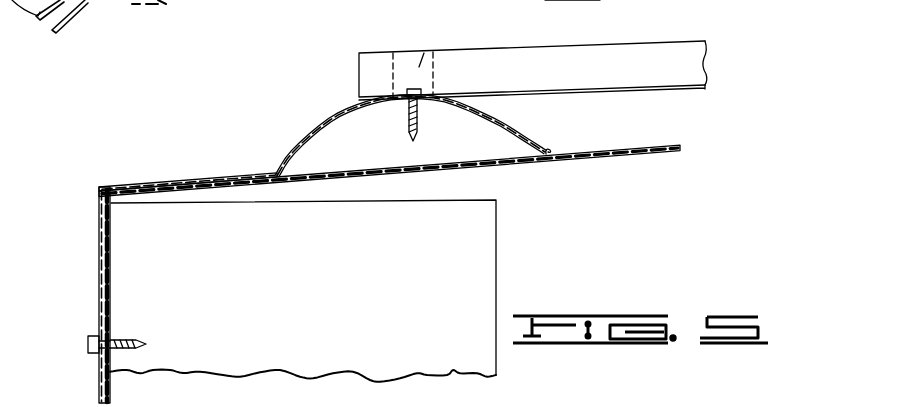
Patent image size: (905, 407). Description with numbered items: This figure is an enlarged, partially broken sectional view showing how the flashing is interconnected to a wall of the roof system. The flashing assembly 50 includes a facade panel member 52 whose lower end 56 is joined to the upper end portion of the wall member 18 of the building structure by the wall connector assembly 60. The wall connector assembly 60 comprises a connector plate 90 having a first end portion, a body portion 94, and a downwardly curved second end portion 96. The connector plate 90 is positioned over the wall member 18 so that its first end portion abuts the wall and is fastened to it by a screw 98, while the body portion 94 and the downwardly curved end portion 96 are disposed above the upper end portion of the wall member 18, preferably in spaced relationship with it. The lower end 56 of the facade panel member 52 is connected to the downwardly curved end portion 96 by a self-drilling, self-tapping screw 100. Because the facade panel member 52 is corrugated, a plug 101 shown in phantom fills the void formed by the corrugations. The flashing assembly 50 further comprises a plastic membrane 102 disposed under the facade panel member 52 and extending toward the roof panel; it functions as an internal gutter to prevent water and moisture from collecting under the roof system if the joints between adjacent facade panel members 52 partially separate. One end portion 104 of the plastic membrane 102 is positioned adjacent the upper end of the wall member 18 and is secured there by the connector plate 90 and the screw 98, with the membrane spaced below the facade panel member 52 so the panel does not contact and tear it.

The wall member 18 is at (330, 284).
The flashing assembly 50 is at (560, 44).
The facade panel member 52 is at (645, 44).
The lower end 56 is at (408, 63).
The wall connector assembly 60 is at (175, 176).
The connector plate 90 is at (99, 272).
The body portion 94 is at (196, 179).
The downwardly curved second end portion 96 is at (500, 124).
The screw 98 is at (88, 343).
The self-drilling, self-tapping screw 100 is at (421, 87).
The hidden bore 101 is at (434, 49).
The plastic membrane 102 is at (488, 170).
The one end portion 104 is at (110, 284).